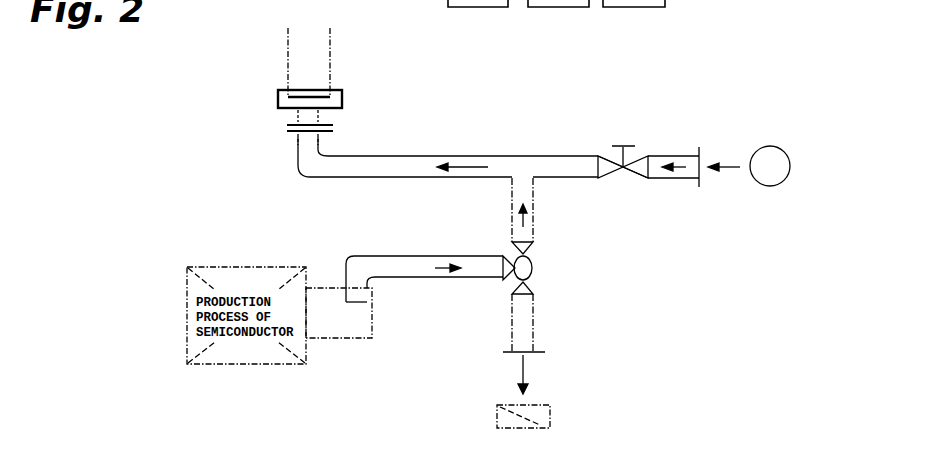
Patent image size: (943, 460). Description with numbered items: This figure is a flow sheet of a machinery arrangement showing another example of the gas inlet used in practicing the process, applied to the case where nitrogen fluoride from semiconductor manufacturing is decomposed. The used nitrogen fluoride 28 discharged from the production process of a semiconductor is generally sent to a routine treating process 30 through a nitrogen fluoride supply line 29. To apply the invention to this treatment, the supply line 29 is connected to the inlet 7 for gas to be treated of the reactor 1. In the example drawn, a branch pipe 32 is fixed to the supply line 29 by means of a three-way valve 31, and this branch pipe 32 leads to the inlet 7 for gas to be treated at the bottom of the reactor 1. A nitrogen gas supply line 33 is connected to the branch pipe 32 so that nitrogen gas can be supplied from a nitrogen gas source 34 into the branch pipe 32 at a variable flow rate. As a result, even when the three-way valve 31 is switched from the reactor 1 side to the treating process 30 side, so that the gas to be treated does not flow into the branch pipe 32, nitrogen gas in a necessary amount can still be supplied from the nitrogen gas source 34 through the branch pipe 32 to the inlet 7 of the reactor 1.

The reactor 1 is at (330, 73).
The inlet for gas to be treated 7 is at (313, 124).
The used nitrogen fluoride 28 is at (372, 336).
The nitrogen fluoride supply line 29 is at (390, 254).
The routine treating process 30 is at (550, 415).
The three-way valve 31 is at (540, 266).
The branch pipe 32 is at (423, 180).
The nitrogen gas supply line 33 is at (674, 147).
The nitrogen gas source 34 is at (778, 139).